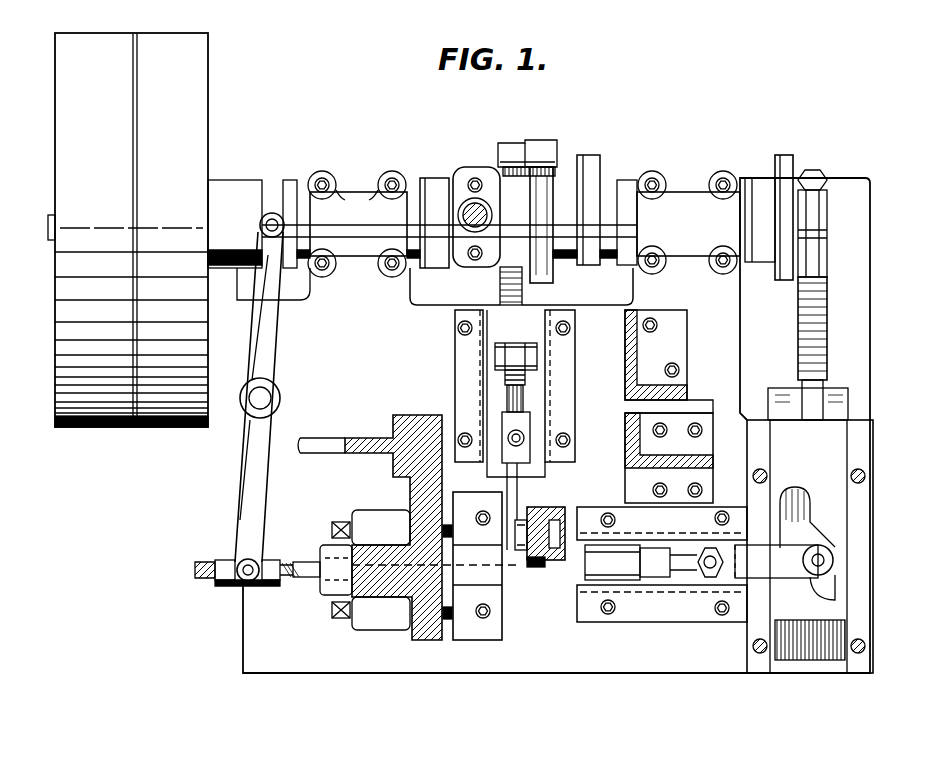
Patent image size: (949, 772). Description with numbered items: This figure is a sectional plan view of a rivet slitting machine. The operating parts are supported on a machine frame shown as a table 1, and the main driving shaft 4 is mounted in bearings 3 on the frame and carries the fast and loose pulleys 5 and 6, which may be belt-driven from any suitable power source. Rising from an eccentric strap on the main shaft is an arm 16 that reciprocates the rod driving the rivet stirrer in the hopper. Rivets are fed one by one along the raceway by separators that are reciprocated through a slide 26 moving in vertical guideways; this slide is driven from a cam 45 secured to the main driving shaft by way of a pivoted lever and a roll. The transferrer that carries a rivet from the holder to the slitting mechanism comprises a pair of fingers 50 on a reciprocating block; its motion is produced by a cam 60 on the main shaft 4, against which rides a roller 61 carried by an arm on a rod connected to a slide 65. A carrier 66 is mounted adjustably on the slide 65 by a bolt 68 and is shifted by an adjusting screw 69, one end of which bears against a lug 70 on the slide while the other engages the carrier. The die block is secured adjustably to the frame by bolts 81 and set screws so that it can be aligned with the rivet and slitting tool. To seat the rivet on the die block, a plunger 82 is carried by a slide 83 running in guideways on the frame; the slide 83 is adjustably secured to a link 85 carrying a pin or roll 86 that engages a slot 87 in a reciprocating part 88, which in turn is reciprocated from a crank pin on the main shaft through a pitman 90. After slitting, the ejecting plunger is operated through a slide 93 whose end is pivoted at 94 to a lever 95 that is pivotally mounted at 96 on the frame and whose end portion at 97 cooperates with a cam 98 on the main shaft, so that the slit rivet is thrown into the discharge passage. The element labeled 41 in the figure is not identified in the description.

The table 1 is at (243, 668).
The bearings 3 is at (356, 186).
The main driving shaft 4 is at (525, 721).
The fast pulley 5 is at (60, 90).
The loose pulley 6 is at (204, 90).
The arm 16 is at (468, 208).
The slide 26 is at (558, 516).
The adjusting screw 41 is at (524, 296).
The cam 45 is at (786, 160).
The fingers 50 is at (521, 520).
The cam 60 is at (552, 178).
The roller 61 is at (535, 142).
The slide 65 is at (535, 393).
The carrier 66 is at (520, 470).
The bolt 68 is at (526, 433).
The adjusting screw 69 is at (505, 378).
The lug 70 is at (497, 356).
The bolts 81 is at (480, 515).
The plunger 82 is at (349, 522).
The slide 83 is at (620, 562).
The link 85 is at (755, 565).
The pin or roll 86 is at (832, 563).
The slot 87 is at (800, 525).
The reciprocating part 88 is at (825, 460).
The pitman 90 is at (820, 262).
The slide 93 is at (303, 590).
The pivot 94 is at (244, 563).
The lever 95 is at (240, 476).
The pivot 96 is at (262, 398).
The end portion 97 is at (273, 215).
The cam 98 is at (262, 195).